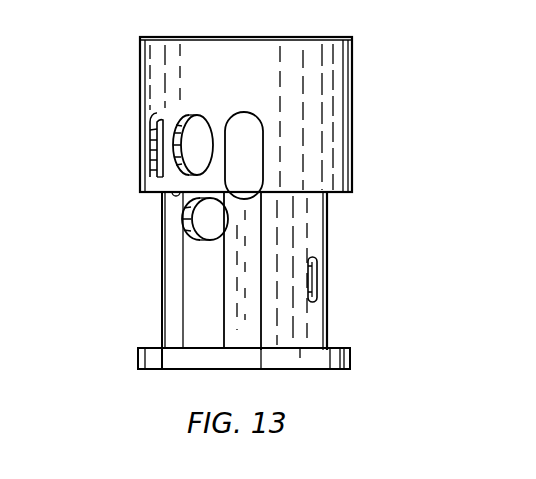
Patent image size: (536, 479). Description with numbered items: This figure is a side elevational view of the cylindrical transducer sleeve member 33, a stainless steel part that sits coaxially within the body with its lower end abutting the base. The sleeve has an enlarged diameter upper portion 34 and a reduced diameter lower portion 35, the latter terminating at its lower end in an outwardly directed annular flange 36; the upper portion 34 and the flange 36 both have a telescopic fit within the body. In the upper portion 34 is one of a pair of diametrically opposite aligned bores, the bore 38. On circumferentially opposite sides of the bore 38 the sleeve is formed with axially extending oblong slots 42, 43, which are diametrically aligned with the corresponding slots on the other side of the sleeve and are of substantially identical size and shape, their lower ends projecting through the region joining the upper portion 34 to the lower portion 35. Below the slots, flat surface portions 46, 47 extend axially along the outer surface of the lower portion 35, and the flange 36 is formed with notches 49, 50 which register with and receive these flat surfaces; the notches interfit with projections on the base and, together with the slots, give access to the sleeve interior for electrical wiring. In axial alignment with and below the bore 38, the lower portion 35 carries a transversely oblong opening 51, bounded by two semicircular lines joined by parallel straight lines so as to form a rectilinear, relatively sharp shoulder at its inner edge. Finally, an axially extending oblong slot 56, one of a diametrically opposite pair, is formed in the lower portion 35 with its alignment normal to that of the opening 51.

The transducer sleeve member 33 is at (355, 67).
The enlarged diameter upper portion 34 is at (354, 120).
The reduced diameter lower portion 35 is at (328, 235).
The annular flange 36 is at (351, 360).
The bore 38 is at (182, 120).
The oblong slot 42 is at (265, 150).
The oblong slot 43 is at (150, 150).
The flat surface portion 46 is at (241, 345).
The flat surface portion 47 is at (168, 266).
The notch 49 is at (262, 355).
The notch 50 is at (163, 357).
The transversely oblong opening 51 is at (182, 217).
The oblong slot 56 is at (320, 276).